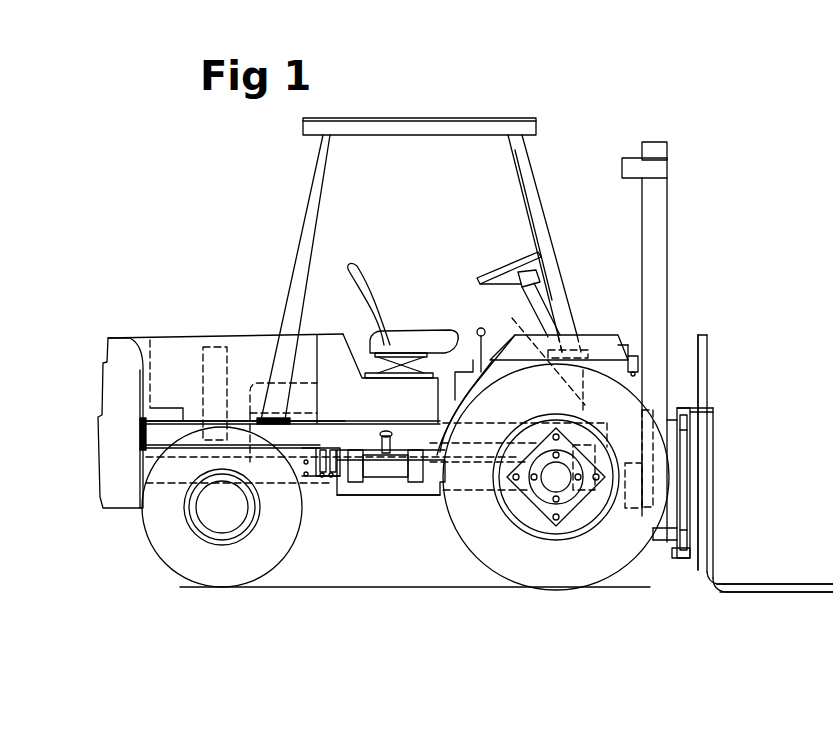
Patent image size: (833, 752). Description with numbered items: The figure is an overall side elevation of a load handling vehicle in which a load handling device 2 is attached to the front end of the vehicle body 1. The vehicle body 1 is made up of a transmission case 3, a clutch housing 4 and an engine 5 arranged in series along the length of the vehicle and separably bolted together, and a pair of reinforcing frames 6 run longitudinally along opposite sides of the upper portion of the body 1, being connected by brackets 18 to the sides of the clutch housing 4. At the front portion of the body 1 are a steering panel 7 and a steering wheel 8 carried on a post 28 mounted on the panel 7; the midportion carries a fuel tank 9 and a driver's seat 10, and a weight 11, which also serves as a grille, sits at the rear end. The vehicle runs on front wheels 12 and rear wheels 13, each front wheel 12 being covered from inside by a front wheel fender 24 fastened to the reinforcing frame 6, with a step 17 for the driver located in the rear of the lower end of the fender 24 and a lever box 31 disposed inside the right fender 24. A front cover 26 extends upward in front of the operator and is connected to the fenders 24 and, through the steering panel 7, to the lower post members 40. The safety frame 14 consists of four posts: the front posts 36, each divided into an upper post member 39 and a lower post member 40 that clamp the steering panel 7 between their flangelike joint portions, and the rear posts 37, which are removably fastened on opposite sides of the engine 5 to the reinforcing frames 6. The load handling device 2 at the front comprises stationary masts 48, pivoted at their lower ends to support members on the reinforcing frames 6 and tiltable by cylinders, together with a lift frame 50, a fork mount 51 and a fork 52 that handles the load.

The vehicle body 1 is at (405, 497).
The load handling device 2 is at (716, 396).
The transmission case 3 is at (437, 482).
The clutch housing 4 is at (330, 488).
The engine 5 is at (278, 506).
The reinforcing frame 6 is at (287, 432).
The steering panel 7 is at (556, 325).
The steering wheel 8 is at (490, 268).
The fuel tank 9 is at (392, 472).
The driver's seat 10 is at (372, 313).
The weight 11 is at (112, 448).
The front wheel 12 is at (468, 546).
The rear wheel 13 is at (170, 540).
The safety frame 14 is at (484, 115).
The step 17 is at (377, 460).
The bracket 18 is at (317, 483).
The front wheel fender 24 is at (594, 335).
The front cover 26 is at (640, 356).
The post 28 is at (540, 345).
The lever box 31 is at (464, 367).
The front post 36 is at (540, 186).
The rear post 37 is at (312, 230).
The upper post member 39 is at (546, 226).
The lower post member 40 is at (537, 356).
The stationary mast 48 is at (660, 236).
The lift frame 50 is at (674, 467).
The fork mount 51 is at (716, 440).
The fork 52 is at (796, 586).